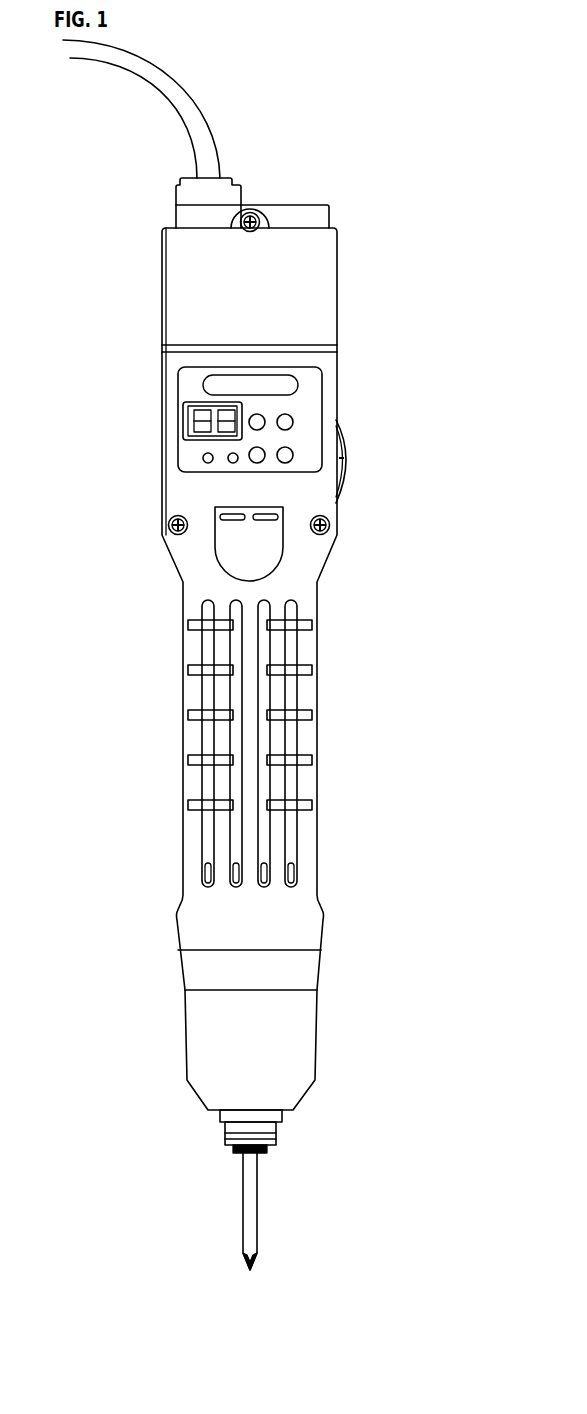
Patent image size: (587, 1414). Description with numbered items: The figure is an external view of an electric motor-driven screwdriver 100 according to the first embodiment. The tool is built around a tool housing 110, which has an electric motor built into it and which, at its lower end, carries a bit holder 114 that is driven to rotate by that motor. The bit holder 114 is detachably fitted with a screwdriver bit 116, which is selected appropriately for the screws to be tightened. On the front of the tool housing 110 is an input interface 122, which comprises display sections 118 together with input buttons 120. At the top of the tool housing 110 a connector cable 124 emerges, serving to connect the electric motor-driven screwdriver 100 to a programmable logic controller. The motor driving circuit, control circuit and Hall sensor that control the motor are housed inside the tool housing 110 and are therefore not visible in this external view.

The electric motor-driven screwdriver 100 is at (303, 140).
The tool housing 110 is at (265, 323).
The bit holder 114 is at (278, 1135).
The screwdriver bit 116 is at (250, 1228).
The display sections 118 is at (245, 386).
The input buttons 120 is at (250, 457).
The input interface 122 is at (308, 408).
The connector cable 124 is at (106, 53).